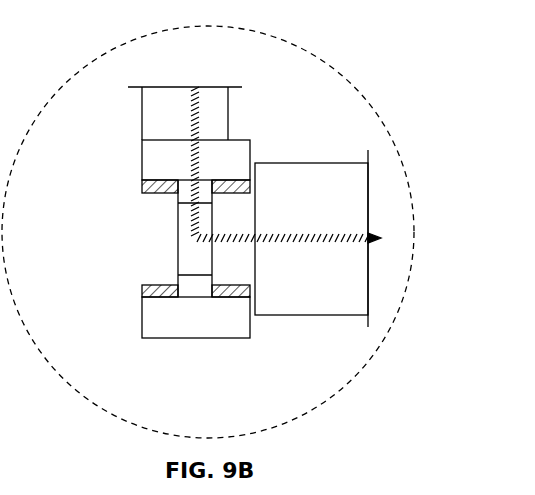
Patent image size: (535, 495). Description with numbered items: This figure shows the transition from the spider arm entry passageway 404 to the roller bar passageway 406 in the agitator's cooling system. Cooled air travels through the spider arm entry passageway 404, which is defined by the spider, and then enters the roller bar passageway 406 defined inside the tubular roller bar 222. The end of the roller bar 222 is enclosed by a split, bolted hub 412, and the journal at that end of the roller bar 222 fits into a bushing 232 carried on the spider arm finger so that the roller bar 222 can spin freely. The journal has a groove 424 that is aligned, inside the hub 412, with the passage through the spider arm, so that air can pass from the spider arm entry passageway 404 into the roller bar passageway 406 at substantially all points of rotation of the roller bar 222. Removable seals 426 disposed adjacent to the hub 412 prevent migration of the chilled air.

The spider arm entry passageway 404 is at (187, 123).
The hub 412 is at (181, 87).
The removable seals 426 is at (160, 180).
The bushing 232 is at (147, 183).
The groove 424 is at (188, 204).
The roller bar passageway 406 is at (322, 248).
The roller bar 222 is at (350, 297).